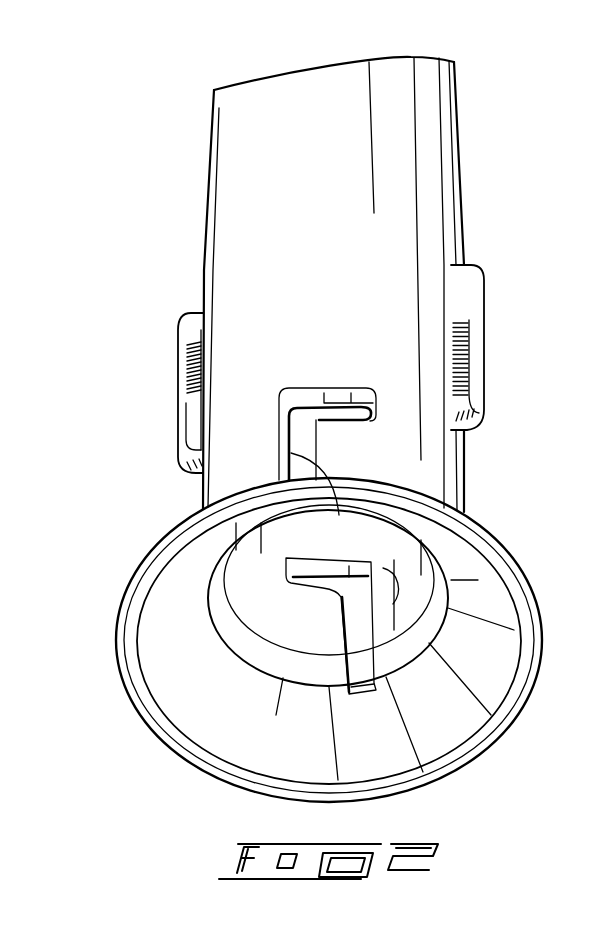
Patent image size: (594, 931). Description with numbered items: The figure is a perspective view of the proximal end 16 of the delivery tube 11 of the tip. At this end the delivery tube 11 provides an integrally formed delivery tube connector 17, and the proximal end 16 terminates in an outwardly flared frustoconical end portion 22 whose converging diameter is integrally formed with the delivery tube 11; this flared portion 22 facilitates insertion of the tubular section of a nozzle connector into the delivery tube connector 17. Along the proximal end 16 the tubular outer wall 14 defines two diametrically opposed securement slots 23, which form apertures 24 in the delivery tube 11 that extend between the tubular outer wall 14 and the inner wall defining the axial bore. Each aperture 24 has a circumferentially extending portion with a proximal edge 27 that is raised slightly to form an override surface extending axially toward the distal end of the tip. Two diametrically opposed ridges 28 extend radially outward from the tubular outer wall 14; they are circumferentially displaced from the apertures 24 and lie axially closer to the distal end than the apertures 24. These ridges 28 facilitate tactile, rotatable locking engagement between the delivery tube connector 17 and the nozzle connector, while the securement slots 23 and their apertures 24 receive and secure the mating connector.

The delivery tube 11 is at (352, 280).
The tubular outer wall 14 is at (248, 214).
The proximal end 16 is at (504, 136).
The delivery tube connector 17 is at (490, 478).
The frustoconical end portion 22 is at (138, 733).
The securement slot 23 is at (321, 501).
The aperture 24 is at (279, 463).
The proximal edge 27 is at (333, 433).
The ridge 28 is at (176, 363).